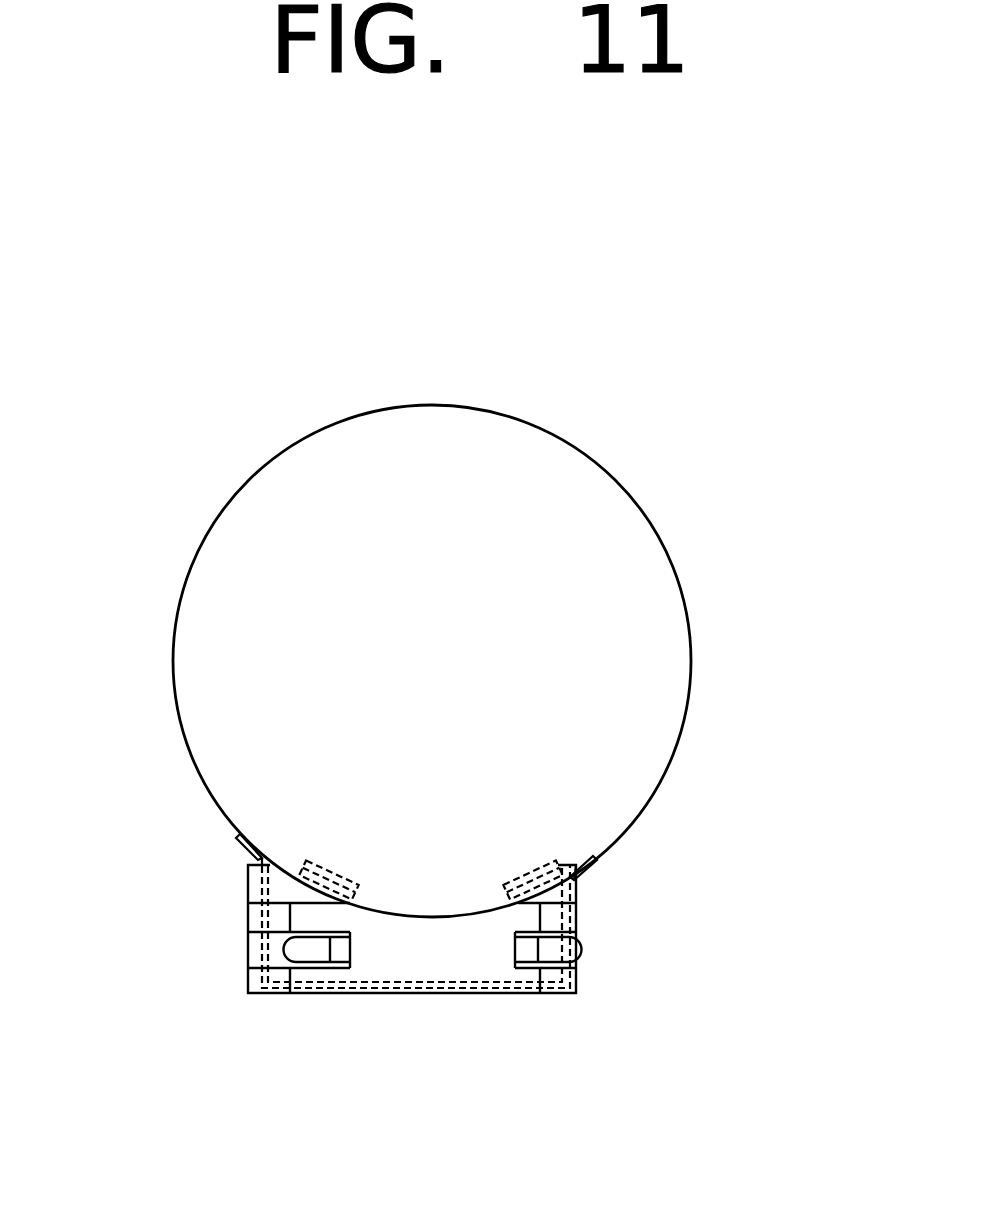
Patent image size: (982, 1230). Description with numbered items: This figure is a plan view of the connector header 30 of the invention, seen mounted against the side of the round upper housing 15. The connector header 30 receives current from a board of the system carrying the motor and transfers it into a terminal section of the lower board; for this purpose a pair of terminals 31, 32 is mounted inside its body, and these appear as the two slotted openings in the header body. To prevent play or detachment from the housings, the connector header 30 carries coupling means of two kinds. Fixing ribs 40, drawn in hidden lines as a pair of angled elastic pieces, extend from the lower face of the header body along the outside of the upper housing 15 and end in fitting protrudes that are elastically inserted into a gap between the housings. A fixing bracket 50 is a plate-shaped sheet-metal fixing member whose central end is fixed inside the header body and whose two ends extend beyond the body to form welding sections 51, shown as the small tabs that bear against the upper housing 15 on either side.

The upper housing 15 is at (573, 428).
The connector header 30 is at (215, 1037).
The terminal 31 is at (583, 950).
The terminal 32 is at (283, 956).
The fixing rib 40 is at (348, 883).
The fixing bracket 50 is at (372, 986).
The welding section 51 is at (253, 845).